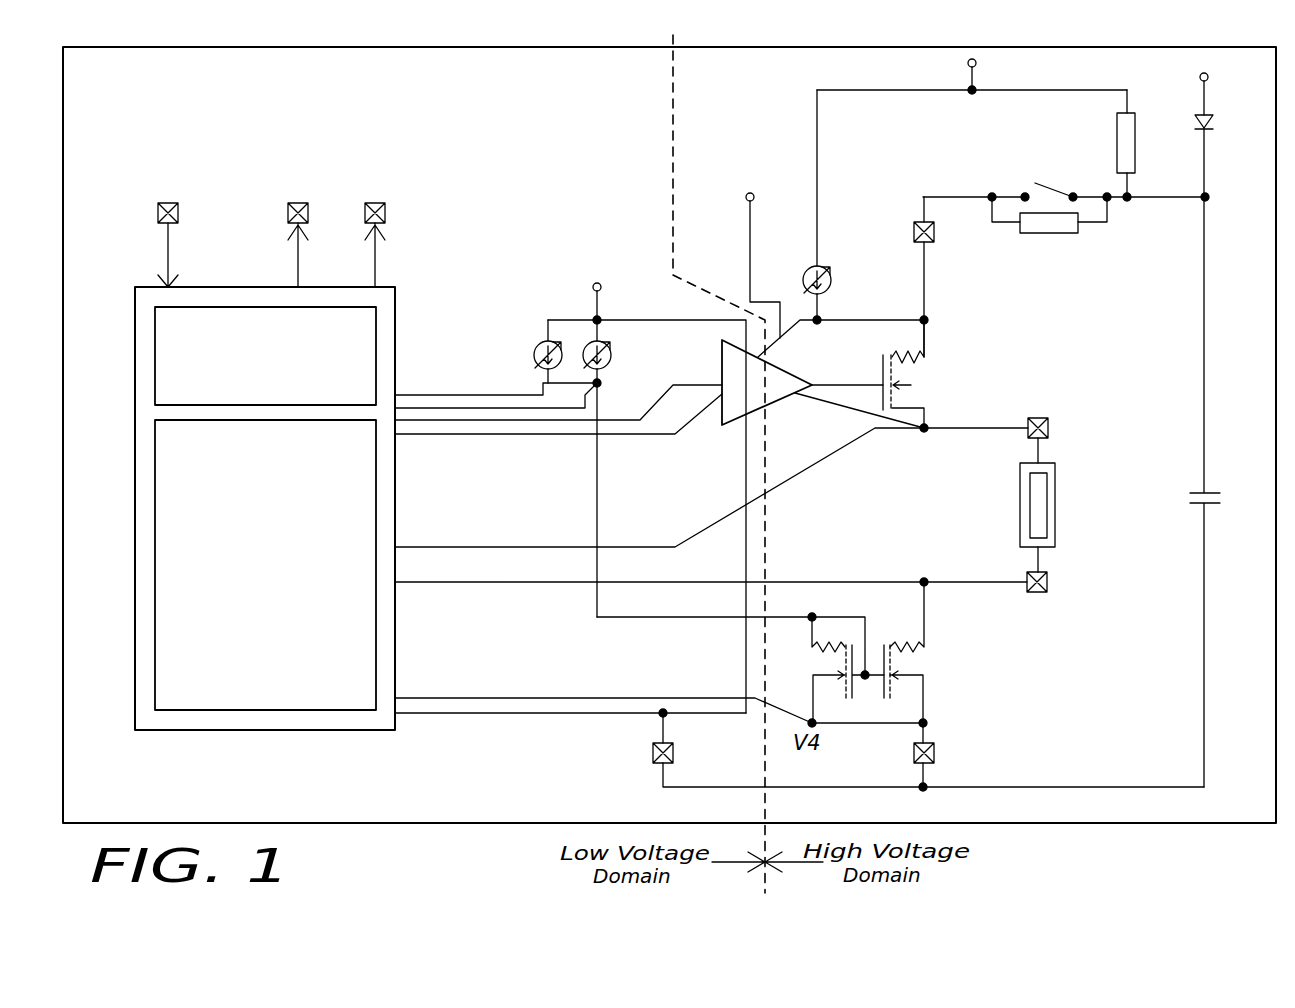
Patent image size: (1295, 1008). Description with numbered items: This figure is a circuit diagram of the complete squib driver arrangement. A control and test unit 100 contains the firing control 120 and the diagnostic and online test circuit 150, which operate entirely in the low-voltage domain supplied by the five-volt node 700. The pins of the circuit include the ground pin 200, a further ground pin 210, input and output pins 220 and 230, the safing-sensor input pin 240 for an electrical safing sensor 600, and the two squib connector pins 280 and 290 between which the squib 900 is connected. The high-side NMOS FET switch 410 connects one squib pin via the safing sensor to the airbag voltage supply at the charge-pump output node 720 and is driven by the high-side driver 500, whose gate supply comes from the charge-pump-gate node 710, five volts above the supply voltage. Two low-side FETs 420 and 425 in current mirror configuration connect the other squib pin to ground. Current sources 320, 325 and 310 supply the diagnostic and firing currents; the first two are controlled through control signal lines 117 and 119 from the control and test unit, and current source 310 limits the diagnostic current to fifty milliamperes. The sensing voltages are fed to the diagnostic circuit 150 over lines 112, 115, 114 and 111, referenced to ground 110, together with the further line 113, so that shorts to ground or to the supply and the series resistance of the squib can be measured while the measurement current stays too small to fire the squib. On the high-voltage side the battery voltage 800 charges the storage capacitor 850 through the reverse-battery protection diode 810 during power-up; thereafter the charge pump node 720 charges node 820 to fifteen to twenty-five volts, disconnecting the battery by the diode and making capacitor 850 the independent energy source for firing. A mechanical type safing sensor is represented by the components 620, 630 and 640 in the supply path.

The control and test unit 100 is at (133, 705).
The ground reference GND 110 is at (452, 714).
The voltage sensing line for V4 111 is at (440, 698).
The voltage sensing line for V1 112 is at (420, 421).
The HSD control line 113 is at (480, 435).
The voltage sensing line for V3 114 is at (433, 583).
The voltage sensing line for V2 115 is at (450, 547).
The control signal line 117 is at (458, 408).
The control signal line 119 is at (409, 395).
The firing control 120 is at (188, 370).
The diagnostic and online testing circuit 150 is at (188, 552).
The ground pin GND 200 is at (914, 753).
The circuit pin 210 is at (653, 753).
The circuit pin 220 is at (293, 203).
The circuit pin 230 is at (372, 203).
The safing sensor input pin 240 is at (180, 213).
The squib connector pin 280 is at (1047, 582).
The squib connector pin 290 is at (1048, 428).
The current source I3 310 is at (803, 281).
The current source I1 320 is at (612, 352).
The current source I2 325 is at (535, 348).
The high-side NMOS-FET switch N30 410 is at (913, 370).
The low-side NMOS-FET N10 420 is at (917, 660).
The low-side NMOS-FET N20 425 is at (817, 663).
The high-side driver 500 is at (727, 425).
The electrical safing sensor 600 is at (122, 165).
The mechanical safing sensor component 620 is at (1117, 160).
The mechanical safing sensor component 630 is at (1055, 177).
The mechanical safing sensor component 640 is at (1053, 234).
The 5V supply node 700 is at (597, 284).
The charge-pump-Gate node 710 is at (752, 195).
The charge-pump-AVS output node 720 is at (972, 95).
The vehicle battery input VBat 800 is at (1185, 92).
The reverse battery protection diode 810 is at (1226, 156).
The connection node 820 is at (914, 232).
The energy storing capacitor Cstore 850 is at (1220, 498).
The squib 900 is at (1055, 490).